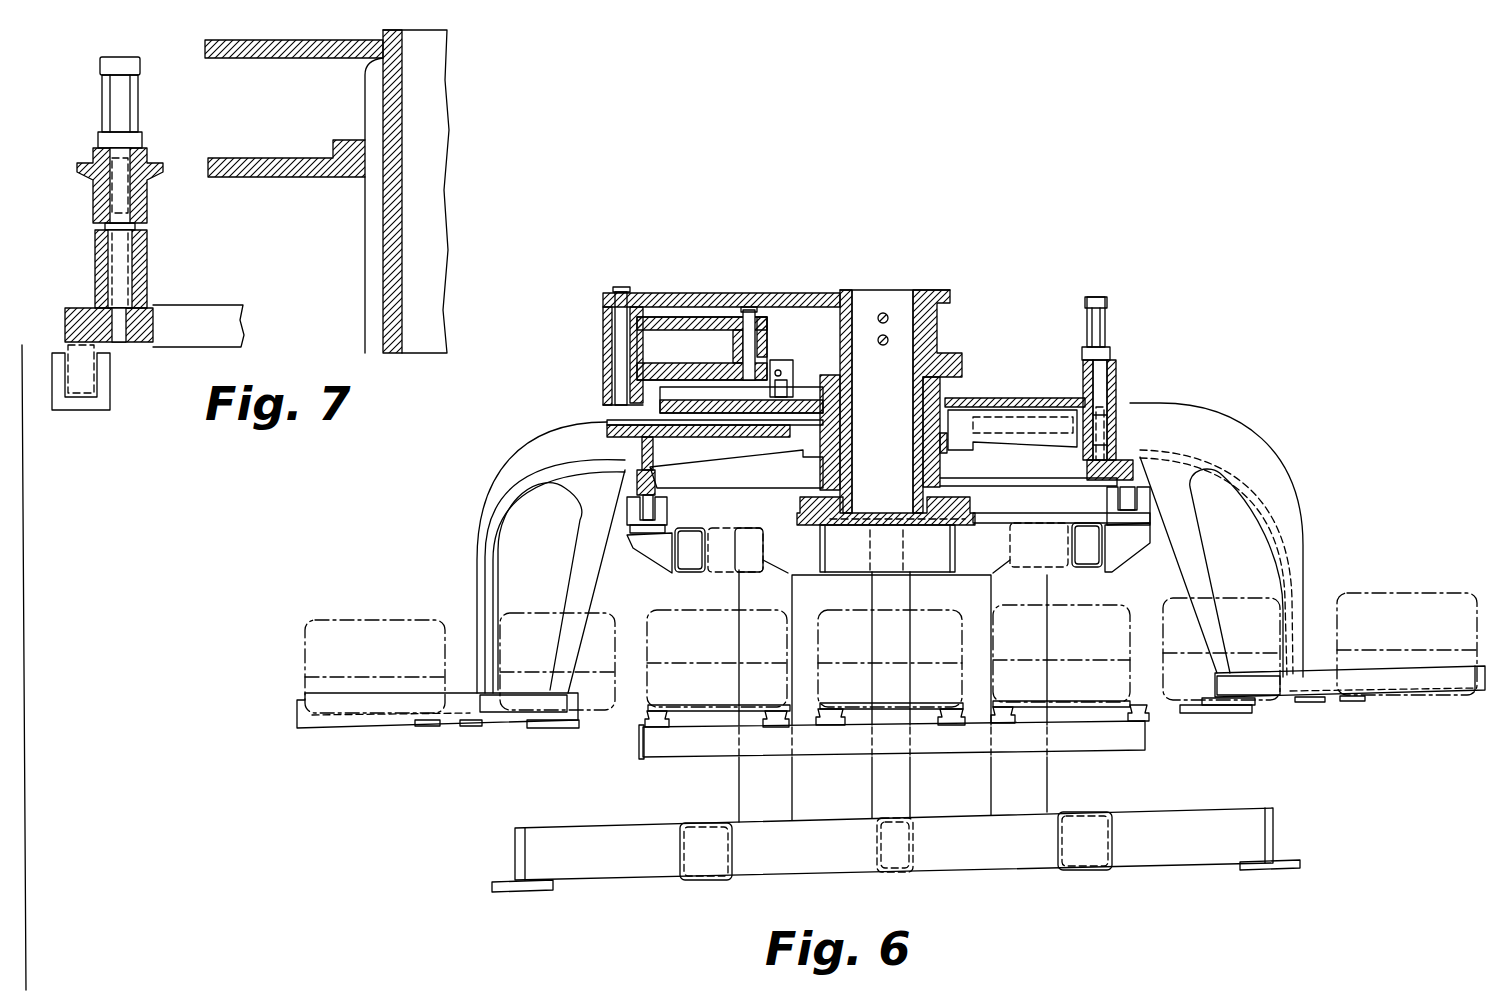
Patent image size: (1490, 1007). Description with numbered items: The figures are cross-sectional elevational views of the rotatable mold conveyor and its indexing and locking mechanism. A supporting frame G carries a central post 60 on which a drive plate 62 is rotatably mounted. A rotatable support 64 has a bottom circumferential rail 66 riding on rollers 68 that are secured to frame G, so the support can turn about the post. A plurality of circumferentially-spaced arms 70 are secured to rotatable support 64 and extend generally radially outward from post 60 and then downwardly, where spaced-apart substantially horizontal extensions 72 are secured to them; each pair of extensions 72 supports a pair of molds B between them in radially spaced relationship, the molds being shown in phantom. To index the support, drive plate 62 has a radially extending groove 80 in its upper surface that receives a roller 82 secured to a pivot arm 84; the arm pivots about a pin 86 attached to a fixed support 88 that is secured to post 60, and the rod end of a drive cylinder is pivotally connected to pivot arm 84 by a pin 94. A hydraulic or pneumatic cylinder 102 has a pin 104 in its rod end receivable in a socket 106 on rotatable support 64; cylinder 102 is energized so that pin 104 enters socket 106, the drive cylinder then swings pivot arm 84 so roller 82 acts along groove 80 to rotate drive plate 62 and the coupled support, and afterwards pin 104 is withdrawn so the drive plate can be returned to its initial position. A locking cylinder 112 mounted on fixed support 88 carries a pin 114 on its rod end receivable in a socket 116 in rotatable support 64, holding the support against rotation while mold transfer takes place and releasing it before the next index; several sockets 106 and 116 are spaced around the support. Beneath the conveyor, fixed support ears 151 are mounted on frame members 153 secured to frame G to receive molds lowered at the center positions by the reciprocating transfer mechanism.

In FIG. 6, the central post 60 is at (915, 288).
In FIG. 6, the drive plate 62 is at (975, 398).
In FIG. 6, the rotatable support 64 is at (607, 427).
In FIG. 7, the bottom circumferential rail 66 is at (67, 323).
In FIG. 6, the bottom circumferential rail 66 is at (657, 475).
In FIG. 7, the rollers 68 is at (82, 397).
In FIG. 6, the rollers 68 is at (667, 502).
In FIG. 6, the arms 70 is at (528, 462).
In FIG. 6, the horizontal extensions 72 is at (315, 715).
In FIG. 6, the radially extending groove 80 is at (693, 397).
In FIG. 6, the roller 82 is at (782, 380).
In FIG. 6, the pivot arm 84 is at (650, 370).
In FIG. 6, the pin 86 is at (603, 310).
In FIG. 7, the fixed support 88 is at (157, 163).
In FIG. 6, the fixed support 88 is at (800, 292).
In FIG. 6, the pin 94 is at (745, 318).
In FIG. 6, the hydraulic or pneumatic cylinder 102 is at (1108, 320).
In FIG. 6, the pin 104 is at (1115, 365).
In FIG. 6, the socket 106 is at (1100, 414).
In FIG. 7, the locking cylinder 112 is at (137, 93).
In FIG. 7, the pin 114 is at (127, 198).
In FIG. 7, the socket 116 is at (118, 247).
In FIG. 6, the fixed support ears 151 is at (640, 718).
In FIG. 6, the frame members 153 is at (682, 750).
In FIG. 6, the mold B is at (375, 618).
In FIG. 6, the supporting frame G is at (1052, 785).